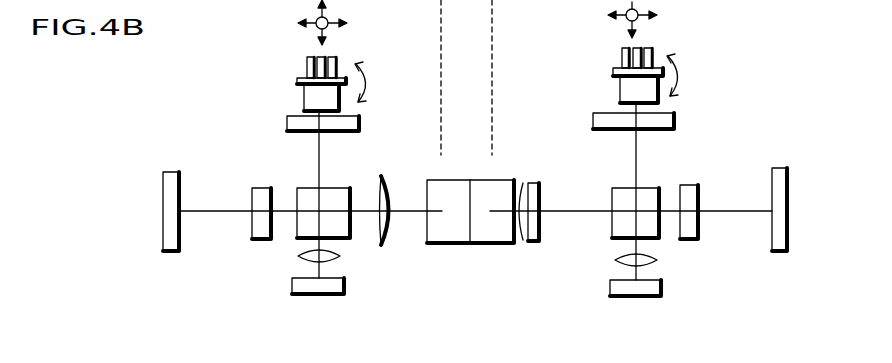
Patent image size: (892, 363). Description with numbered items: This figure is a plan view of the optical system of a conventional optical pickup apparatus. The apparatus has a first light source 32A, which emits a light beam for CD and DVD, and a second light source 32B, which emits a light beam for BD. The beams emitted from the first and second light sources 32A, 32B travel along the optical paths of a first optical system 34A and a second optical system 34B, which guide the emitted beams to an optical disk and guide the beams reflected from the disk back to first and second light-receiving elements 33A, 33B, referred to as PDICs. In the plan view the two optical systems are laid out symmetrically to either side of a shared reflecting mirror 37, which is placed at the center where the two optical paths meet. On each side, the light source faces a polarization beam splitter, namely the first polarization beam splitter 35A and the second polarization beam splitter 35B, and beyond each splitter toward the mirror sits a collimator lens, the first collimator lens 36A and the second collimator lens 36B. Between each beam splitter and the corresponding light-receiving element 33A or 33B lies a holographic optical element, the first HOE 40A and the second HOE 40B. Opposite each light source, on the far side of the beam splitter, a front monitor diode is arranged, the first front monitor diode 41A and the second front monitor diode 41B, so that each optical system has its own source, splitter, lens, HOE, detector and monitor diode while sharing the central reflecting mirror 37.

The first light source 32A is at (304, 92).
The second light source 32B is at (620, 88).
The first light-receiving element (PDIC) 33A is at (168, 252).
The second light-receiving element (PDIC) 33B is at (778, 252).
The first optical system 34A is at (320, 149).
The second optical system 34B is at (636, 145).
The first polarization beam splitter 35A is at (307, 188).
The second polarization beam splitter 35B is at (650, 188).
The first collimator lens 36A is at (393, 180).
The second collimator lens 36B is at (527, 178).
The reflecting mirror 37 is at (497, 245).
The first HOE (Holographic Optical Element) 40A is at (257, 187).
The second HOE (Holographic Optical Element) 40B is at (692, 185).
The first front monitor diode 41A is at (322, 297).
The second front monitor diode 41B is at (632, 297).